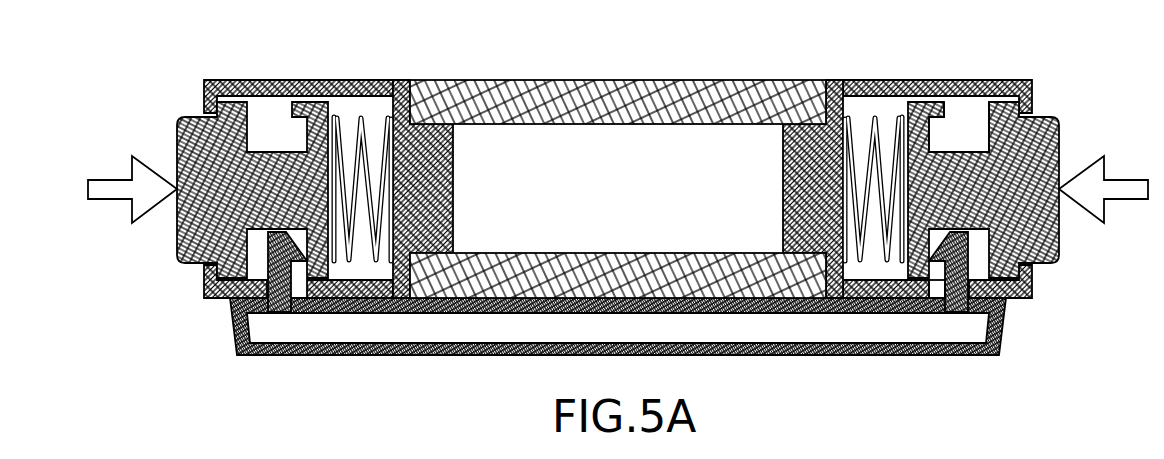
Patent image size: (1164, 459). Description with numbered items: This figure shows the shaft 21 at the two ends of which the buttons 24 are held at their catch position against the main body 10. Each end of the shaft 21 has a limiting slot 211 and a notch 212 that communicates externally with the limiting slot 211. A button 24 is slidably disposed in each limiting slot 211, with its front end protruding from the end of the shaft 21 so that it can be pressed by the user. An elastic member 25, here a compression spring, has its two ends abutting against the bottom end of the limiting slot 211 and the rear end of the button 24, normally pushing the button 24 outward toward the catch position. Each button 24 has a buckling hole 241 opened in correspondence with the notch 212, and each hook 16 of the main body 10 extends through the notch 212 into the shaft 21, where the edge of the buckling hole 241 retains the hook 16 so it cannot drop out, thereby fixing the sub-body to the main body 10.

The main body 10 is at (636, 367).
The hook 16 is at (1005, 298).
The shaft 21 is at (838, 87).
The limiting slot 211 is at (967, 125).
The notch 212 is at (935, 302).
The button 24 is at (1040, 142).
The buckling hole 241 is at (977, 257).
The elastic member 25 is at (873, 125).